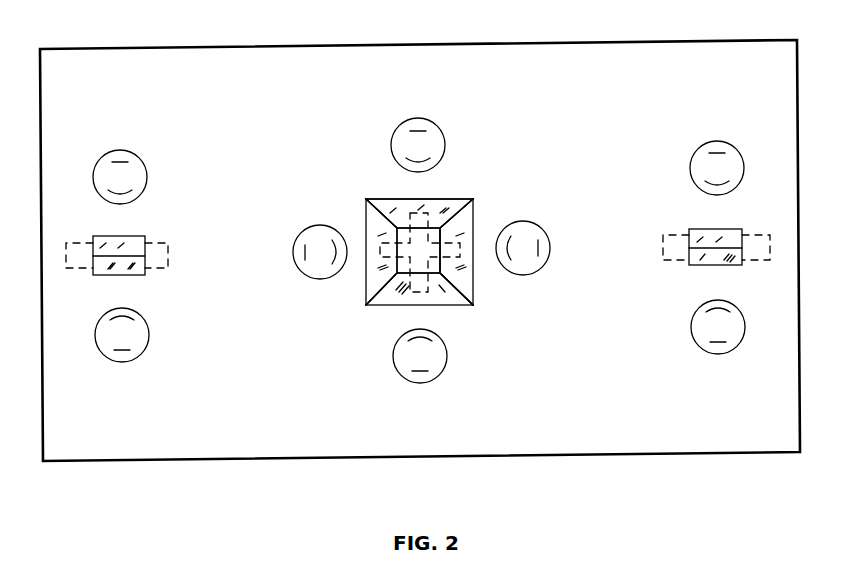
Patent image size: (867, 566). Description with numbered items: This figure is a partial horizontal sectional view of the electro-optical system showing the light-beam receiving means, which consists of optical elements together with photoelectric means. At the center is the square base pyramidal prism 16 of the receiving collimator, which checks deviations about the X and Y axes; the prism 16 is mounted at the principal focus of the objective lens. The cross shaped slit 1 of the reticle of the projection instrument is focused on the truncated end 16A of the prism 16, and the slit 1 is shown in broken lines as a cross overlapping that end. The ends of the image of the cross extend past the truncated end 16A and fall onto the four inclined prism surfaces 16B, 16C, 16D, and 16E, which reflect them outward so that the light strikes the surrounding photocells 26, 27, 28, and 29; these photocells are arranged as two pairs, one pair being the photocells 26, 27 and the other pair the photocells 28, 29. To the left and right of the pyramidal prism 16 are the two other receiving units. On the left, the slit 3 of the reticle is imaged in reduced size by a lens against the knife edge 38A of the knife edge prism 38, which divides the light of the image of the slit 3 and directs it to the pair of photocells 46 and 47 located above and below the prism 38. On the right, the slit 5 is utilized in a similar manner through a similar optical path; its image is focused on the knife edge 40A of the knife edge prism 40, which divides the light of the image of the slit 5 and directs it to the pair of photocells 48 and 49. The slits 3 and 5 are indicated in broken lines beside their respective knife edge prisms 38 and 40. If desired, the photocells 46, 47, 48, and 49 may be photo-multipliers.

The cross shaped slit 1 is at (411, 212).
The slit 3 is at (167, 262).
The slit 5 is at (680, 238).
The square base pyramidal prism 16 is at (390, 297).
The truncated end 16A is at (438, 295).
The inclined prism surface 16B is at (465, 213).
The inclined prism surface 16C is at (372, 217).
The inclined prism surface 16D is at (403, 298).
The inclined prism surface 16E is at (452, 200).
The photocell 26 is at (547, 233).
The photocell 27 is at (300, 272).
The photocell 28 is at (430, 378).
The photocell 29 is at (428, 120).
The knife edge prism 38 is at (140, 238).
The knife edge 38A is at (108, 272).
The knife edge prism 40 is at (698, 262).
The knife edge 40A is at (720, 248).
The photocell 46 is at (128, 151).
The photocell 47 is at (145, 348).
The photocell 48 is at (720, 142).
The photocell 49 is at (700, 348).